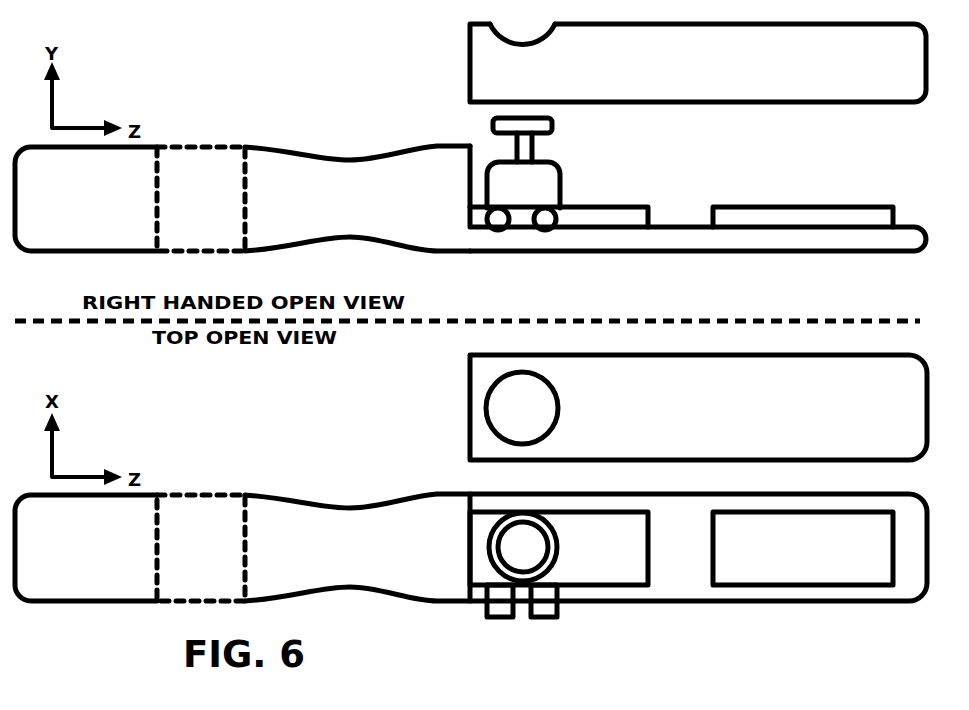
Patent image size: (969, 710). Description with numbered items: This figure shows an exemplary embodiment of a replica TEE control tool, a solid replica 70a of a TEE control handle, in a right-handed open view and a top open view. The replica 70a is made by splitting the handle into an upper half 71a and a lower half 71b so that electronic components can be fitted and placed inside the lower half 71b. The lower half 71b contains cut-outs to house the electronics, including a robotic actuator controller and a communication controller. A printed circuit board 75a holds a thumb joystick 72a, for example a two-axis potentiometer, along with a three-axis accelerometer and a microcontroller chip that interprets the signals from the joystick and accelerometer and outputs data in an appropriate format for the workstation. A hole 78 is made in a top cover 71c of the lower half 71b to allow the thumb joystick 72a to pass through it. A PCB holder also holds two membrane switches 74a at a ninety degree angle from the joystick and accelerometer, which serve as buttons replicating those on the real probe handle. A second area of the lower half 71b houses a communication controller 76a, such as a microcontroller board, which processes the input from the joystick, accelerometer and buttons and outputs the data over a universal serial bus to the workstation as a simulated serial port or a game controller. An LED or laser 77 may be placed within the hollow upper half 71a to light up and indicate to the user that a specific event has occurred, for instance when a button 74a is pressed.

The solid replica 70a is at (303, 85).
The upper half 71a is at (227, 147).
The lower half 71b is at (703, 254).
The top cover 71c is at (470, 67).
The thumb joystick 72a is at (552, 121).
The membrane switches 74a is at (580, 236).
The printed circuit board 75a is at (641, 208).
The communication controller 76a is at (803, 208).
The LED or laser 77 is at (201, 374).
The hole 78 is at (554, 27).